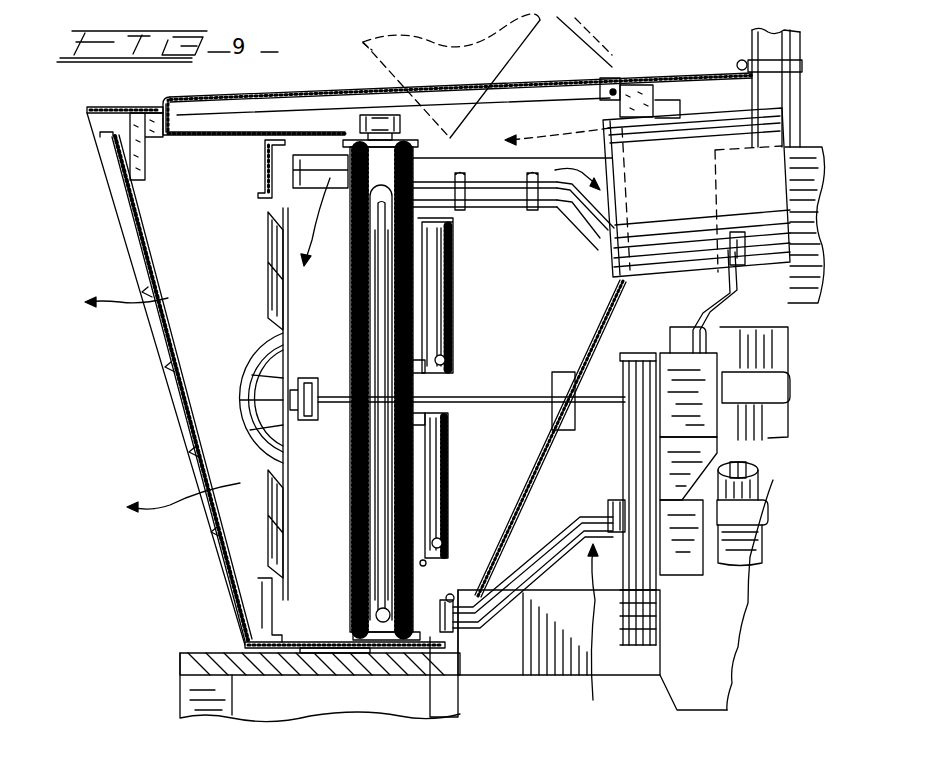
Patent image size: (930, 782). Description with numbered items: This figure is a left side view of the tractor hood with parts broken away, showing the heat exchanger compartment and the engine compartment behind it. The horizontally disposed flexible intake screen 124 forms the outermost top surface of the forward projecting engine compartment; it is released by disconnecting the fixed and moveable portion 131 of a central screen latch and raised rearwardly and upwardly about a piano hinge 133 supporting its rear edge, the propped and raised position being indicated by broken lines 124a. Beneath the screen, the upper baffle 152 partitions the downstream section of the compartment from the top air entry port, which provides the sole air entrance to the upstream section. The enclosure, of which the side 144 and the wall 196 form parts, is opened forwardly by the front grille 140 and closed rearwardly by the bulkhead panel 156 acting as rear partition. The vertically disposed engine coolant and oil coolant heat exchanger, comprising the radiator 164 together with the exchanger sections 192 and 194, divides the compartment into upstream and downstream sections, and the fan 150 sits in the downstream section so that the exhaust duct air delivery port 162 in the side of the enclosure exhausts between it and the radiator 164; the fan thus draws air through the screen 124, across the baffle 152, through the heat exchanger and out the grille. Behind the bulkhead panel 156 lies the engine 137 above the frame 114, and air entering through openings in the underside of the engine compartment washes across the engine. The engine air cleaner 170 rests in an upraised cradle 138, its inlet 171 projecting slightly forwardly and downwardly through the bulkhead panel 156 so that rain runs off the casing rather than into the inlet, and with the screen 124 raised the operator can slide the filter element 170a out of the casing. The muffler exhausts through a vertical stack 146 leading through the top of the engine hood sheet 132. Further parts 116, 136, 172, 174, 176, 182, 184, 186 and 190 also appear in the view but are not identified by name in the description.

The frame 114 is at (493, 700).
The air flow 116 is at (149, 340).
The intake screen 124 is at (196, 97).
The broken lines 124a is at (614, 22).
The fixed and moveable portion of central screen latch 131 is at (180, 115).
The engine hood sheet 132 is at (635, 85).
The piano hinge 133 is at (610, 98).
The side wall flange 136 is at (98, 108).
The engine 137 is at (768, 438).
The upraised cradle 138 is at (745, 265).
The front grille 140 is at (167, 398).
The side of enclosure 144 is at (305, 162).
The vertical stack 146 is at (818, 29).
The fan 150 is at (268, 222).
The upper baffle 152 is at (250, 135).
The bulkhead panel 156 is at (517, 495).
The exhaust duct air delivery port 162 is at (300, 165).
The radiator 164 is at (390, 168).
The engine air cleaner 170 is at (678, 118).
The filter element 170a is at (363, 43).
The inlet 171 is at (598, 235).
The support 172 is at (675, 112).
The drive shaft 174 is at (478, 397).
The conduit 176 is at (560, 215).
The bracket 182 is at (268, 175).
The fan hub 184 is at (308, 377).
The fan 186 is at (312, 422).
The bearing bracket 190 is at (413, 393).
The heat exchanger 192 is at (457, 318).
The heat exchanger 194 is at (450, 442).
The heat exchanger compartment enclosure 196 is at (303, 640).